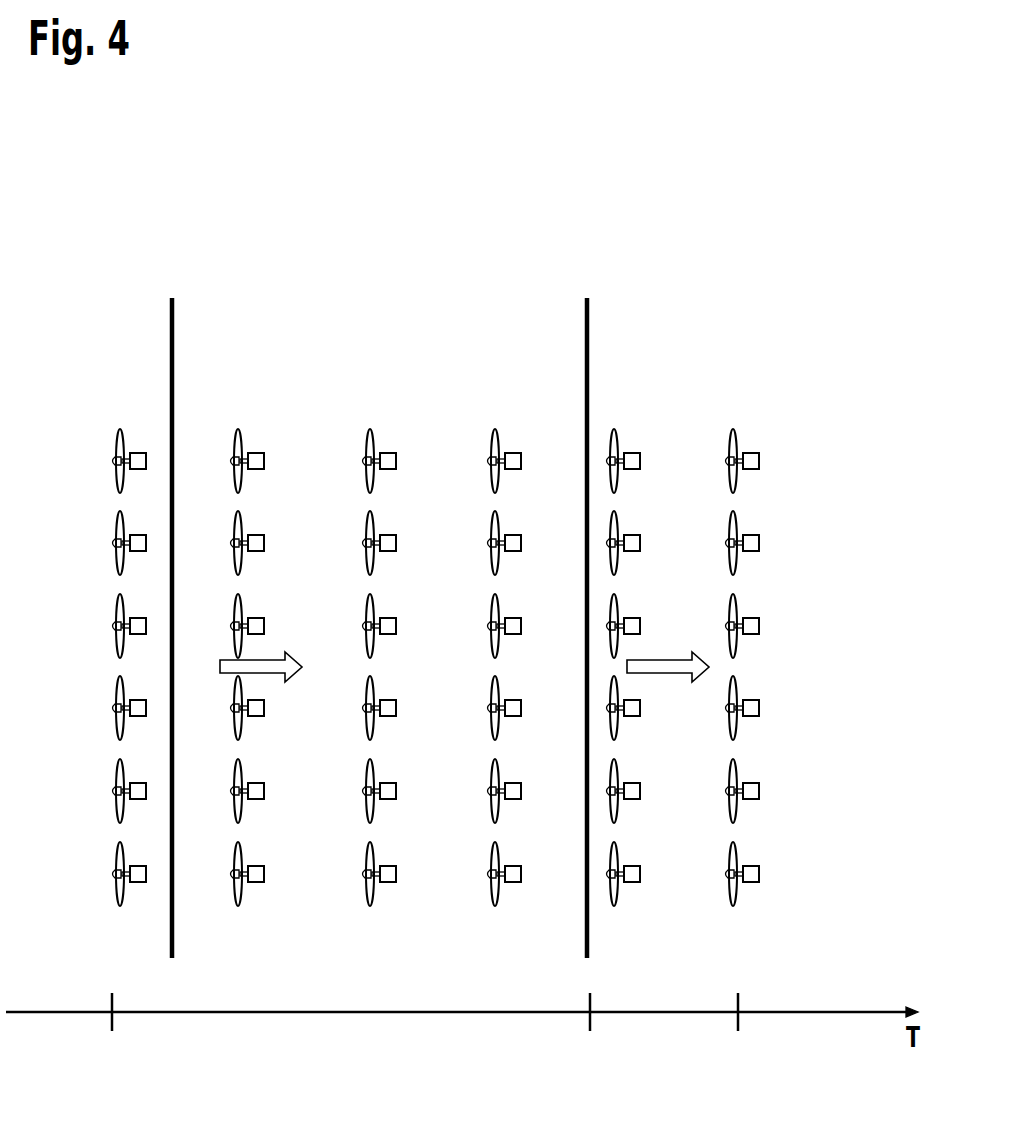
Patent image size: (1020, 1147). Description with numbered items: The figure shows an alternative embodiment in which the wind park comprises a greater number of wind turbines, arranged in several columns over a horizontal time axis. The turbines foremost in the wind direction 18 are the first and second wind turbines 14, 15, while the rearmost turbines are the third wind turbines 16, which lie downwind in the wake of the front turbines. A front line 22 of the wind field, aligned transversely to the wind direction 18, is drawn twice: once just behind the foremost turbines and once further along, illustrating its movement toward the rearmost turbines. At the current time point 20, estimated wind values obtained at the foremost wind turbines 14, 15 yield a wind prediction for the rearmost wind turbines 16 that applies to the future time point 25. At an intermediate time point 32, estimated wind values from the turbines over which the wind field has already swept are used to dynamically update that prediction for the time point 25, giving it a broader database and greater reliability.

The first wind turbine 14 is at (117, 447).
The second wind turbine 15 is at (117, 530).
The third wind turbine 16 is at (760, 463).
The wind direction 18 is at (298, 651).
The current time point 20 is at (111, 1035).
The front line 22 is at (175, 343).
The future time point 25 is at (738, 1035).
The intermediate time point 32 is at (588, 1035).